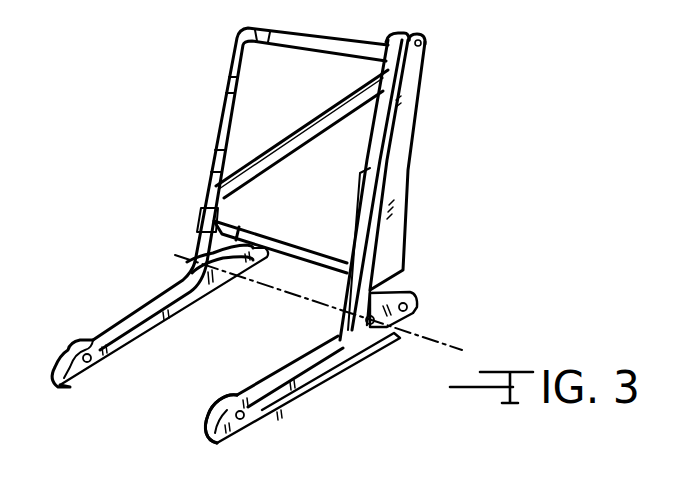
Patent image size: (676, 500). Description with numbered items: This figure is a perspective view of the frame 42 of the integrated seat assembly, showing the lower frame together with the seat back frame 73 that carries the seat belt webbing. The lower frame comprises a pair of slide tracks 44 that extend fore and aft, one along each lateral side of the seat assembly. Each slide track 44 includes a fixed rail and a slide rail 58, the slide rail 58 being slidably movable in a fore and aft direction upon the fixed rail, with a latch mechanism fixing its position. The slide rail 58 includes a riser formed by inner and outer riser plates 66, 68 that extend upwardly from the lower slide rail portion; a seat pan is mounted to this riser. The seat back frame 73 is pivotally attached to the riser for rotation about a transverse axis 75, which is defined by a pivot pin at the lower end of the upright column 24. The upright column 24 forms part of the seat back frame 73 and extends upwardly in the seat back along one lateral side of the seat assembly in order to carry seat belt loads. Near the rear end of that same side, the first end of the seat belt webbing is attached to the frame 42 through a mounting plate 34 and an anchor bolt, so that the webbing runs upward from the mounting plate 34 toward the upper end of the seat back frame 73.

The frame 42 is at (180, 93).
The seat back frame 73 is at (212, 157).
The mounting plate 34 is at (469, 23).
The upright column 24 is at (420, 90).
The slide tracks 44 is at (121, 315).
The slide rail 58 is at (168, 290).
The inner riser plate 66 is at (217, 407).
The outer riser plate 68 is at (280, 397).
The transverse axis 75 is at (440, 340).